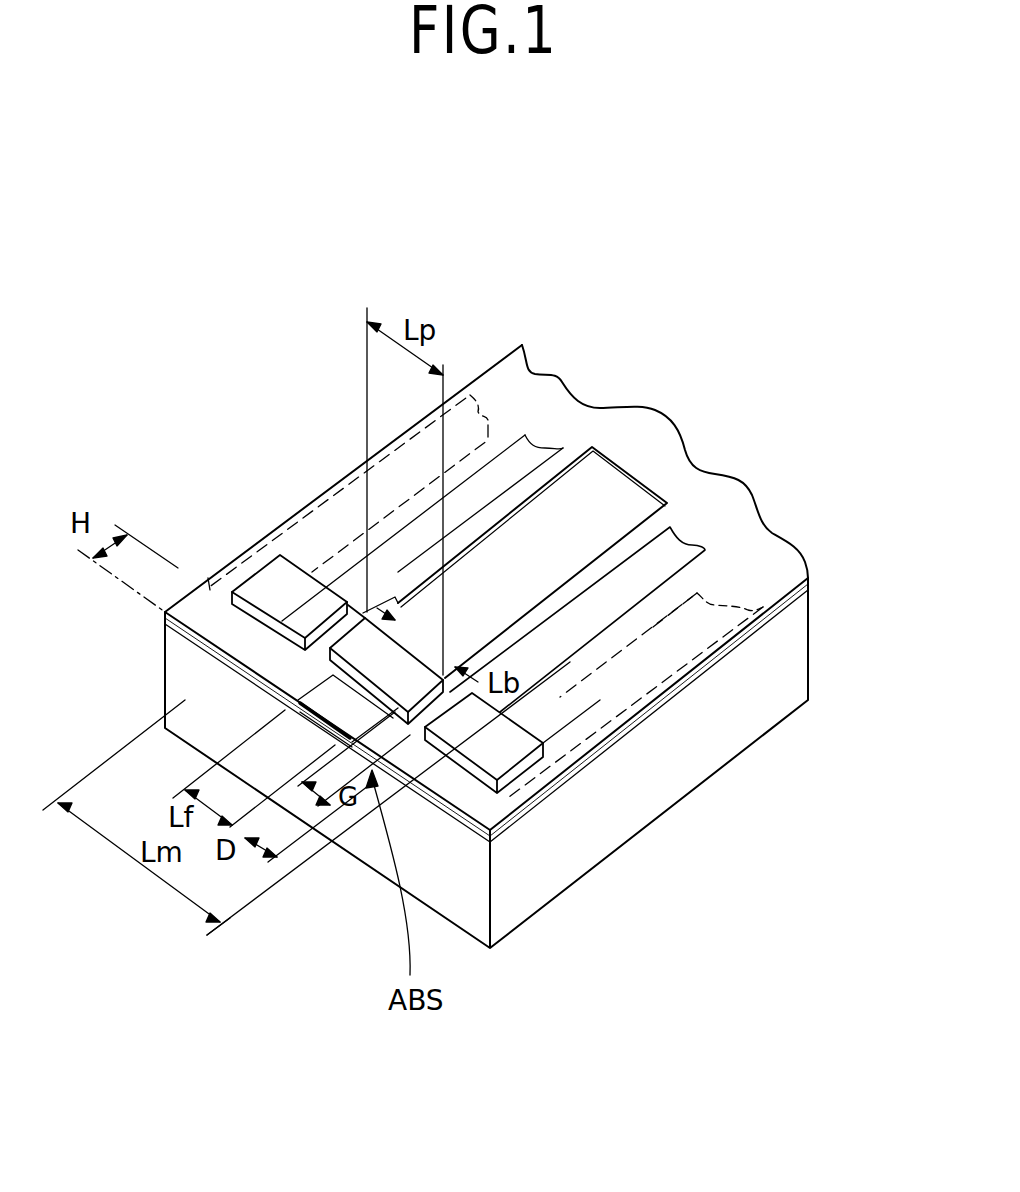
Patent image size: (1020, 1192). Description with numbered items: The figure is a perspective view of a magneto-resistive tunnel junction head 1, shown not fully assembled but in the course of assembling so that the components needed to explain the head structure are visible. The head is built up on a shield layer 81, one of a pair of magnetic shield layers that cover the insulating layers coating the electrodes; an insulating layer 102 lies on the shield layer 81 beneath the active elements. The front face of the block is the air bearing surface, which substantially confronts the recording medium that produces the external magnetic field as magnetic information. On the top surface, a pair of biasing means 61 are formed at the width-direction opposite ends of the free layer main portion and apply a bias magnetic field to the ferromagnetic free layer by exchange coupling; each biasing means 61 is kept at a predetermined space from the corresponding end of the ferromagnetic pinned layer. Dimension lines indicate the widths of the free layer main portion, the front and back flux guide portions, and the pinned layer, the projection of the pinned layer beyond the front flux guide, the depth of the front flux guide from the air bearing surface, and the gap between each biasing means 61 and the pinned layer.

The magneto-resistive tunnel junction head 1 is at (683, 214).
The biasing means 61 is at (267, 577).
The shield layer 81 is at (700, 773).
The insulating layer 102 is at (740, 658).